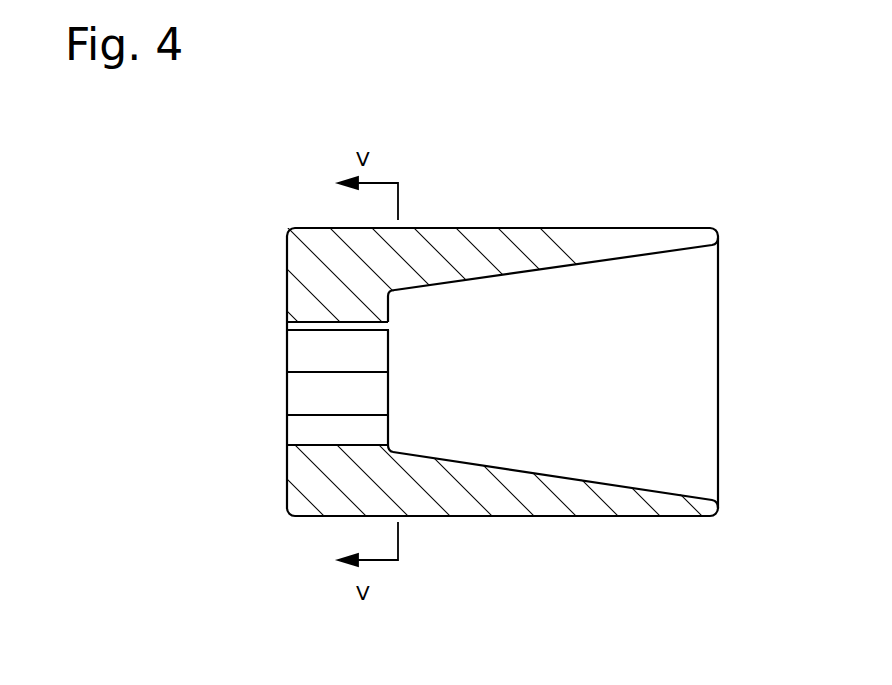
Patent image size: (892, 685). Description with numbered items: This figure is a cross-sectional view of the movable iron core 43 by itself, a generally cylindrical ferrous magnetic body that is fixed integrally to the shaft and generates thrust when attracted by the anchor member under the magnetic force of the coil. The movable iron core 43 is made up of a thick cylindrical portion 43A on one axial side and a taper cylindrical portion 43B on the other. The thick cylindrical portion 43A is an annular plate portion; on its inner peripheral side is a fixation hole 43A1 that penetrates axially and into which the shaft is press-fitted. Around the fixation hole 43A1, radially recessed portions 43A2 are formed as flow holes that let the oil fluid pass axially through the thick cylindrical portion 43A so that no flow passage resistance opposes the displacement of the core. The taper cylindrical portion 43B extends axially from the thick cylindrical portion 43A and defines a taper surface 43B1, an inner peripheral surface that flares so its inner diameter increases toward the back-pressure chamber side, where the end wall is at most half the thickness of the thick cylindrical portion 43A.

The movable iron core 43 is at (513, 255).
The thick cylindrical portion 43A is at (313, 268).
The fixation hole 43A1 is at (323, 391).
The recessed portion 43A2 is at (335, 360).
The taper cylindrical portion 43B is at (698, 237).
The taper surface 43B1 is at (628, 484).